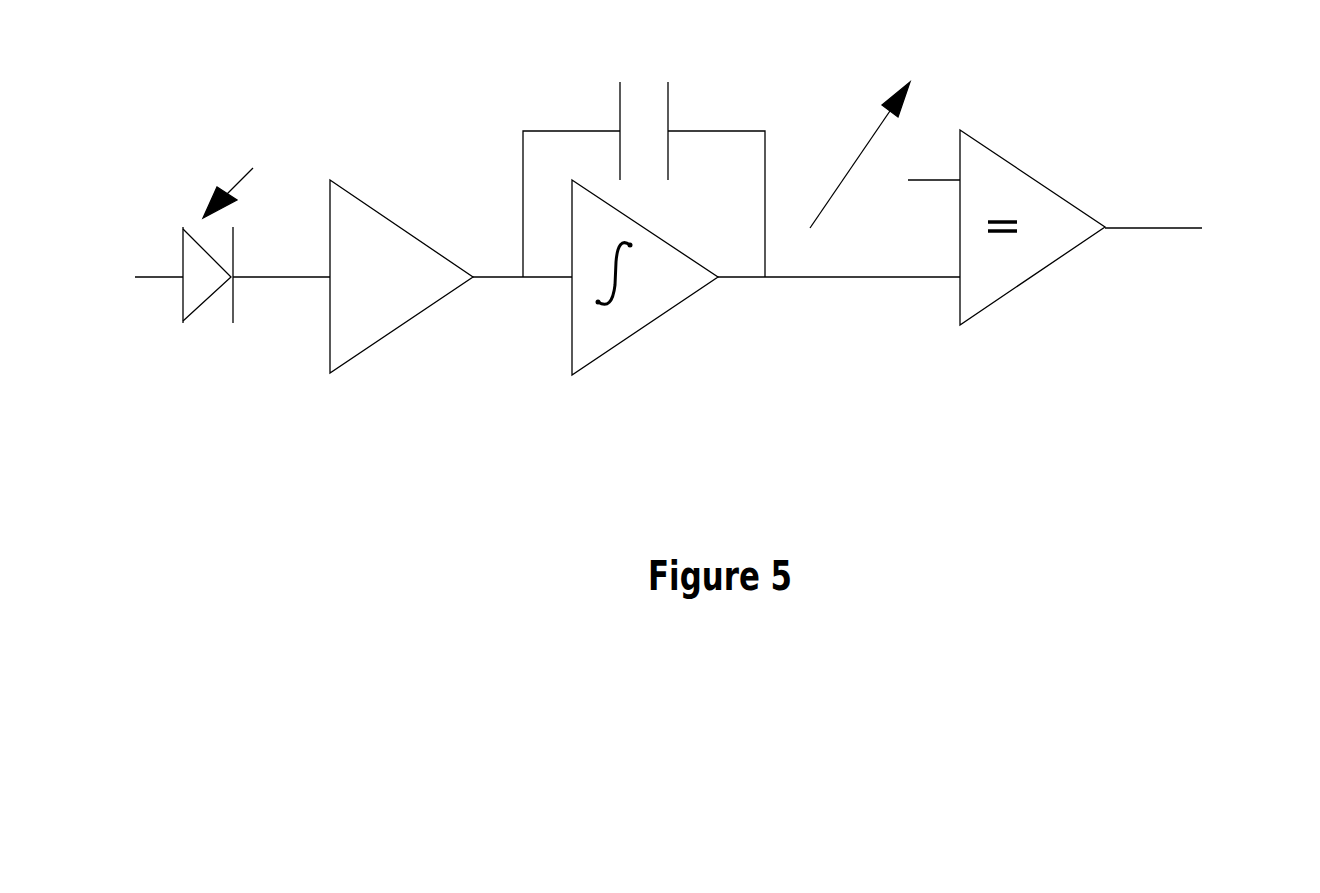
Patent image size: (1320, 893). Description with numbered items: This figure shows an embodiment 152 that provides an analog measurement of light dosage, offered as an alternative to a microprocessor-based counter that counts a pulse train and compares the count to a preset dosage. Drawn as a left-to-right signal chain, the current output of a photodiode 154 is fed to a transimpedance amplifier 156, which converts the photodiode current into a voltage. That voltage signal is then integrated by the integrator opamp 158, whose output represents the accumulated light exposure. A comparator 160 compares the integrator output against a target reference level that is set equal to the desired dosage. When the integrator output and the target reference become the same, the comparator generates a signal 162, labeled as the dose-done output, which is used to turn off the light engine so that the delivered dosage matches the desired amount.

The analog dosage measurement embodiment 152 is at (1187, 514).
The photodiode 154 is at (210, 289).
The transimpedance amplifier 156 is at (401, 295).
The integrator opamp 158 is at (644, 228).
The comparator 160 is at (943, 226).
The signal 162 is at (1205, 251).